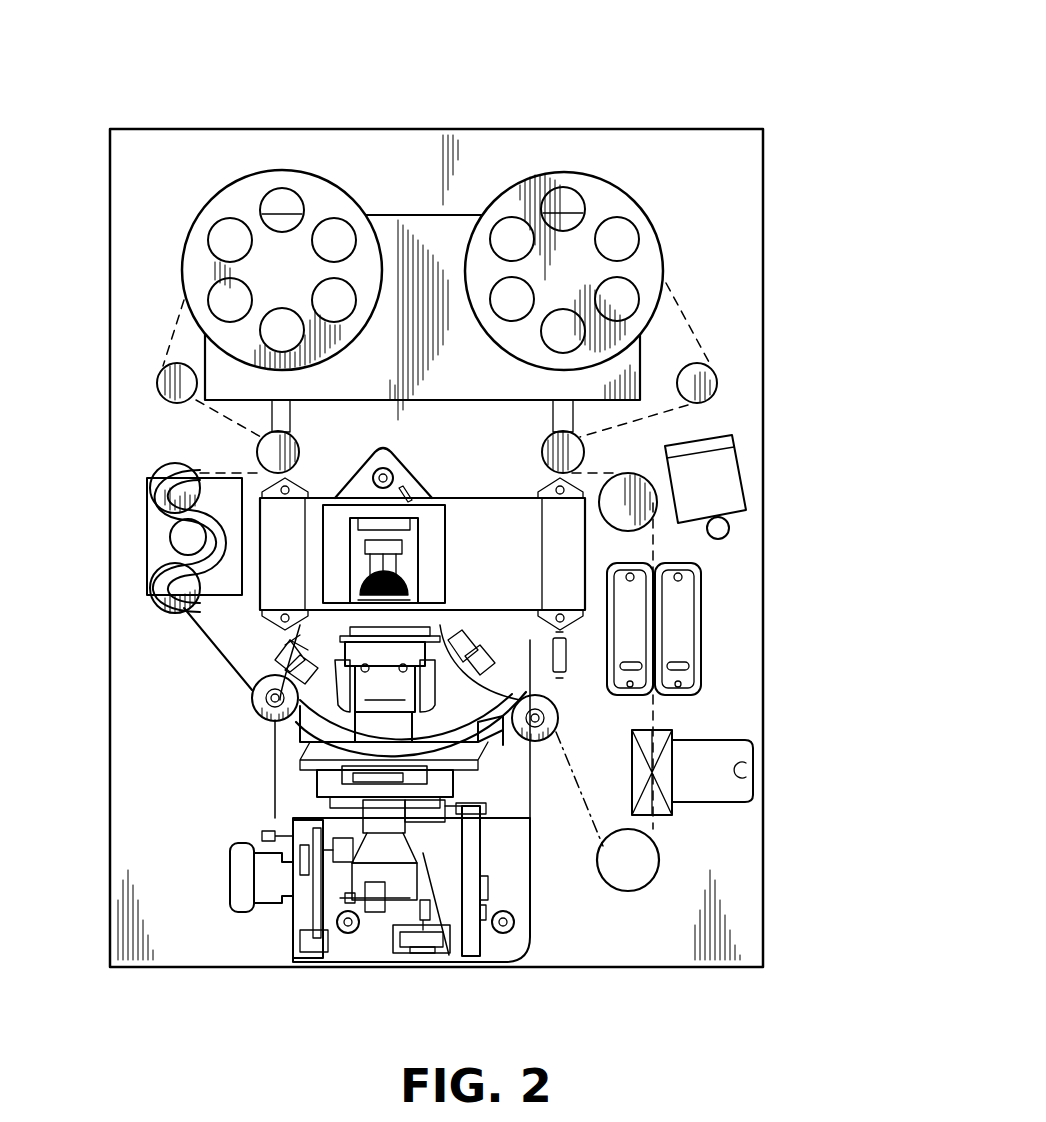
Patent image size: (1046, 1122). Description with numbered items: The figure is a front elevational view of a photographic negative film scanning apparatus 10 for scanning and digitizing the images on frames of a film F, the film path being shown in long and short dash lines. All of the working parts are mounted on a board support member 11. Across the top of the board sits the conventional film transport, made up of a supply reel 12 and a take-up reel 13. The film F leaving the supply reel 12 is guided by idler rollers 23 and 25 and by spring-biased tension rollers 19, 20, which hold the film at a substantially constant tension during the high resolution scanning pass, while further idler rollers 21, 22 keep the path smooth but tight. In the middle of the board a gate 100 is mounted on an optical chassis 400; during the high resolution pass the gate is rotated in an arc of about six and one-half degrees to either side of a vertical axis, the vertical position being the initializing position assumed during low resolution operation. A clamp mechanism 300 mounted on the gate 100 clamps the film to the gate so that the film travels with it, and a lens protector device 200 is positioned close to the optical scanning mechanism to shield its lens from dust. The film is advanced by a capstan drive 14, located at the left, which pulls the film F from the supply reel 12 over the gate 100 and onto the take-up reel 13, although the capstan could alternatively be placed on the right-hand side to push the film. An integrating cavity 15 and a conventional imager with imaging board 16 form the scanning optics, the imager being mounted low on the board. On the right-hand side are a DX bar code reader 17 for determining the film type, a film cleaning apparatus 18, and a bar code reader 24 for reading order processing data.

The photographic negative film scanning apparatus 10 is at (632, 92).
The board support member 11 is at (176, 156).
The supply reel 12 is at (641, 227).
The take-up reel 13 is at (188, 262).
The capstan drive 14 is at (135, 553).
The integrating cavity 15 is at (440, 642).
The imager with imaging board 16 is at (283, 930).
The DX bar code reader 17 is at (672, 806).
The film cleaning apparatus 18 is at (702, 647).
The spring-biased tension roller 19 is at (258, 452).
The spring-biased tension roller 20 is at (576, 452).
The idler roller 21 is at (640, 862).
The idler roller 22 is at (628, 515).
The idler roller 23 is at (165, 388).
The bar code reader 24 is at (740, 506).
The idler roller 25 is at (700, 392).
The gate 100 is at (306, 716).
The lens protector device 200 is at (477, 797).
The clamp mechanism 300 is at (312, 788).
The optical chassis 400 is at (427, 466).
The film F is at (218, 660).